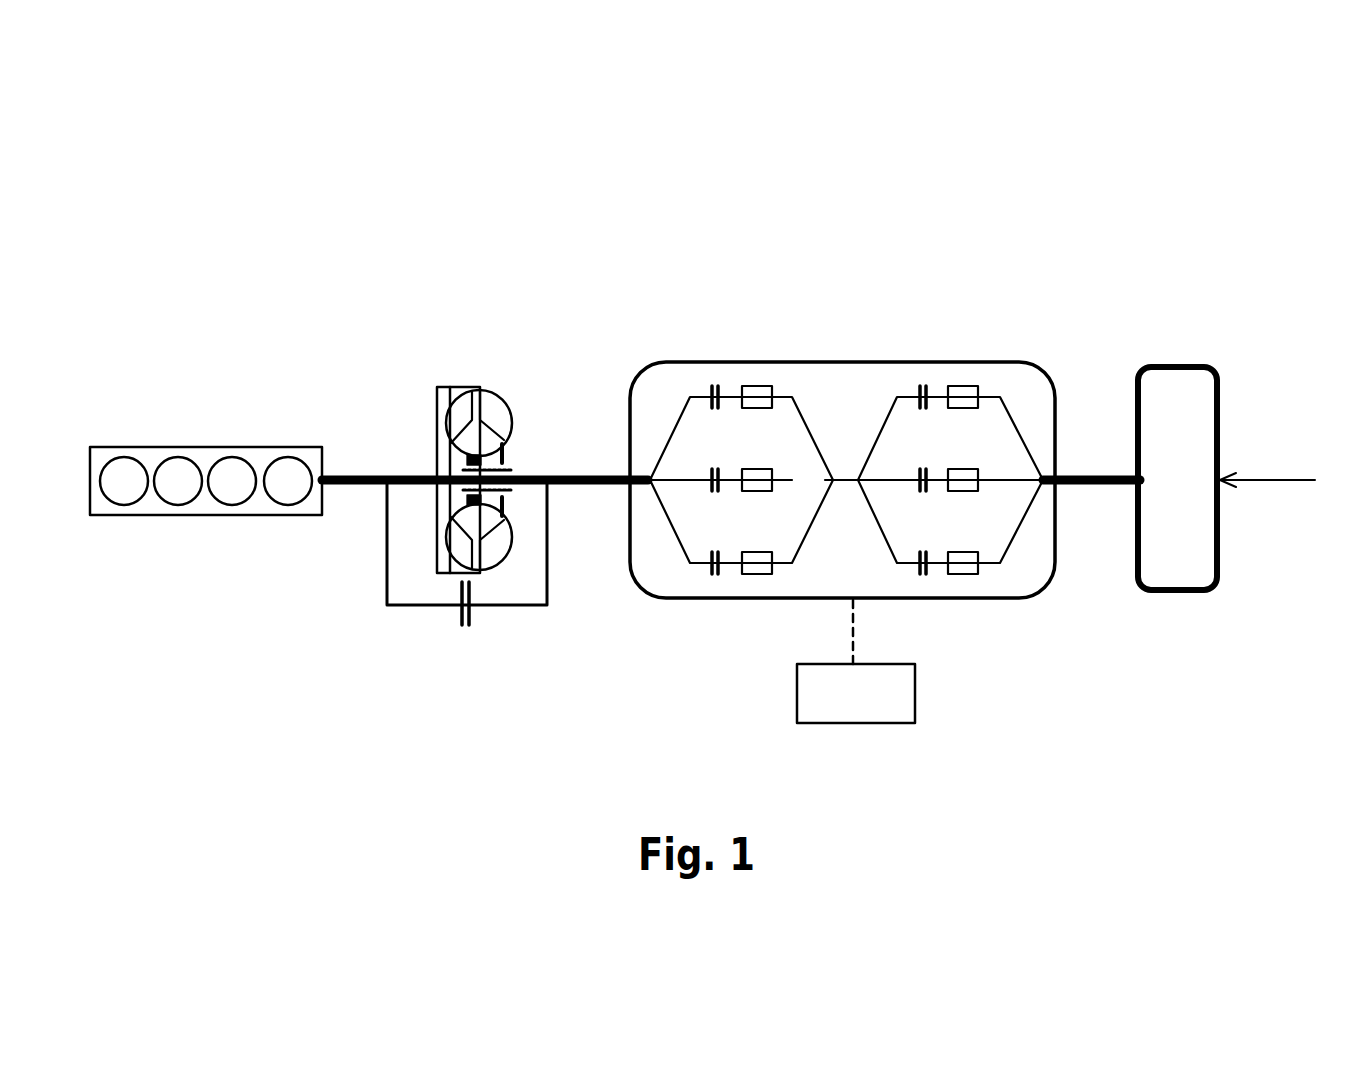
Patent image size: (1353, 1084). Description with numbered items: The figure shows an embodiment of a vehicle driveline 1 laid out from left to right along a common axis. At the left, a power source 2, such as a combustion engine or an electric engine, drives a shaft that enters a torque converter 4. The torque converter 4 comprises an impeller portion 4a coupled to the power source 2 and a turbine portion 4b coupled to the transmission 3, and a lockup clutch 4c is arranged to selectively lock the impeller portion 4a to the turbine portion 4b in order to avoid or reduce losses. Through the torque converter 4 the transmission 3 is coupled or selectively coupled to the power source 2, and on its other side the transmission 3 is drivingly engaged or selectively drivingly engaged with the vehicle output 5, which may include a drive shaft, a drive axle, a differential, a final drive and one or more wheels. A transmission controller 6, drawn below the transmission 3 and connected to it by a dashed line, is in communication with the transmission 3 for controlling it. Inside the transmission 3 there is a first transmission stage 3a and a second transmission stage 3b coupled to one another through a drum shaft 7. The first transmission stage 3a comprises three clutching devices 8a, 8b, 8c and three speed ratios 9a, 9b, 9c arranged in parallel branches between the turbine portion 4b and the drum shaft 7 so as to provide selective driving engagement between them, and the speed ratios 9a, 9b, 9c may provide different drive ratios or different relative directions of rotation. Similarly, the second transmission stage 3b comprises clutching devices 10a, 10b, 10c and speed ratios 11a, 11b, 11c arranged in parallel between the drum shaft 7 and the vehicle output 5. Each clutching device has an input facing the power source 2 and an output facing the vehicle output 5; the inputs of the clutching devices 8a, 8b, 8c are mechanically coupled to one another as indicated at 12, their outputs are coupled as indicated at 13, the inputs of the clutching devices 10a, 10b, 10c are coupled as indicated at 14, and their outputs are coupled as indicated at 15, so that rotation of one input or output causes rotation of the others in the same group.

The driveline 1 is at (1150, 181).
The power source 2 is at (150, 516).
The transmission 3 is at (1050, 599).
The first transmission stage 3a is at (722, 519).
The second transmission stage 3b is at (955, 530).
The torque converter 4 is at (448, 331).
The impeller portion 4a is at (506, 402).
The turbine portion 4b is at (452, 507).
The lockup clutch 4c is at (476, 641).
The vehicle output 5 is at (1190, 367).
The transmission controller 6 is at (890, 724).
The drum shaft 7 is at (850, 486).
The clutching device 8a is at (694, 595).
The clutching device 8b is at (693, 507).
The clutching device 8c is at (710, 371).
The speed ratio 9a is at (773, 588).
The speed ratio 9b is at (769, 500).
The speed ratio 9c is at (772, 377).
The clutching device 10a is at (922, 602).
The clutching device 10b is at (933, 500).
The clutching device 10c is at (903, 366).
The speed ratio 11a is at (975, 546).
The speed ratio 11b is at (978, 430).
The speed ratio 11c is at (997, 378).
The mechanical coupling of first-stage clutch inputs 12 is at (648, 484).
The mechanical coupling of first-stage clutch outputs 13 is at (838, 476).
The mechanical coupling of second-stage clutch inputs 14 is at (857, 476).
The mechanical coupling of second-stage clutch outputs 15 is at (1046, 478).